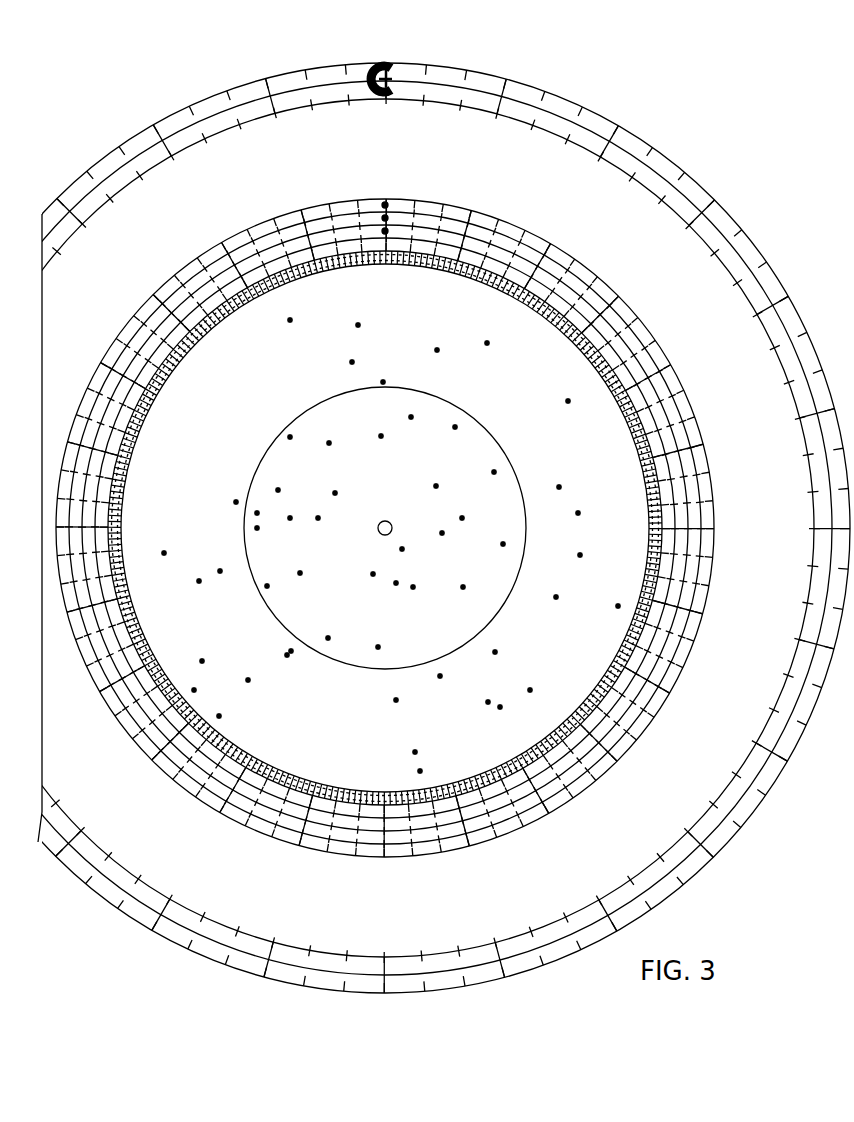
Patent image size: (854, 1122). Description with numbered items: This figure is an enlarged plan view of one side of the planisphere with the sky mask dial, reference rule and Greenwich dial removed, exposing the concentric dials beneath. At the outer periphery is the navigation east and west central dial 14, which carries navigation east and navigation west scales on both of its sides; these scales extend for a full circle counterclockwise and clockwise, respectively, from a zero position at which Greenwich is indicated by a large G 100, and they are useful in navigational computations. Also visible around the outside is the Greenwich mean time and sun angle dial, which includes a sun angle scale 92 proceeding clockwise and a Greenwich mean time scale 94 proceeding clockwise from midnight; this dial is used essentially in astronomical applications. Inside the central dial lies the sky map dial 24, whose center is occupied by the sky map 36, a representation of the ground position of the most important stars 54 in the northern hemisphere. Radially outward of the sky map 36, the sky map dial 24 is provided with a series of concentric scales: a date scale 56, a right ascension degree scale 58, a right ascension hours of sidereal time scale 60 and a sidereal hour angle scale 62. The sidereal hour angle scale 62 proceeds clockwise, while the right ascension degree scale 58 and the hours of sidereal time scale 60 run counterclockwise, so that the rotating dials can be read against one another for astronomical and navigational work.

The navigation east and west central dial 14 is at (212, 967).
The sun angle scale 92 is at (135, 133).
The Greenwich mean time scale 94 is at (242, 105).
The large G 100 is at (379, 62).
The sky map dial 24 is at (545, 807).
The sidereal hour angle scale 62 is at (700, 563).
The right ascension hours of sidereal time scale 60 is at (605, 717).
The right ascension degree scale 58 is at (495, 777).
The date scale 56 is at (232, 750).
The sky map 36 is at (549, 651).
The stars 54 is at (304, 573).